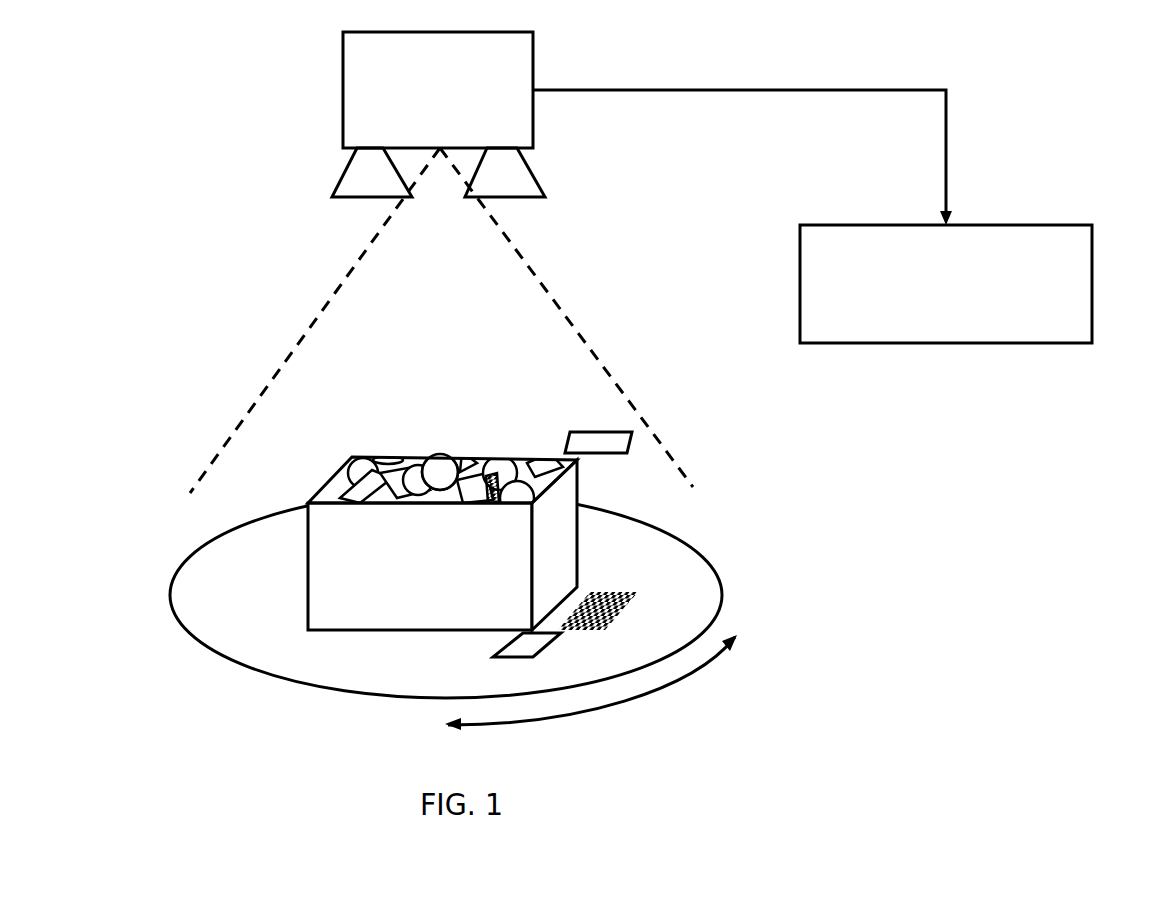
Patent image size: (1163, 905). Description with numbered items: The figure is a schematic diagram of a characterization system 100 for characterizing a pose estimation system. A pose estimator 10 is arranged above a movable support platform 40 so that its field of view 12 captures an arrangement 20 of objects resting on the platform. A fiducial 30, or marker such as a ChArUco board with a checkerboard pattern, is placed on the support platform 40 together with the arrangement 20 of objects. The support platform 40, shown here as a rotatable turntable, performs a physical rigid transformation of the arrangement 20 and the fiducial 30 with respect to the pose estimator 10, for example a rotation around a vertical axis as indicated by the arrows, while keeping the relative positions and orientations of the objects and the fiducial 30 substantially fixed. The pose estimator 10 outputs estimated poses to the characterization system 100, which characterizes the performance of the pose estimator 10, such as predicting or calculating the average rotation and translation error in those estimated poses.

The pose estimation system 10 is at (343, 90).
The field of view 12 is at (325, 285).
The arrangement of objects 20 is at (384, 492).
The fiducial 30 is at (630, 610).
The support platform 40 is at (170, 595).
The characterization system 100 is at (1013, 225).